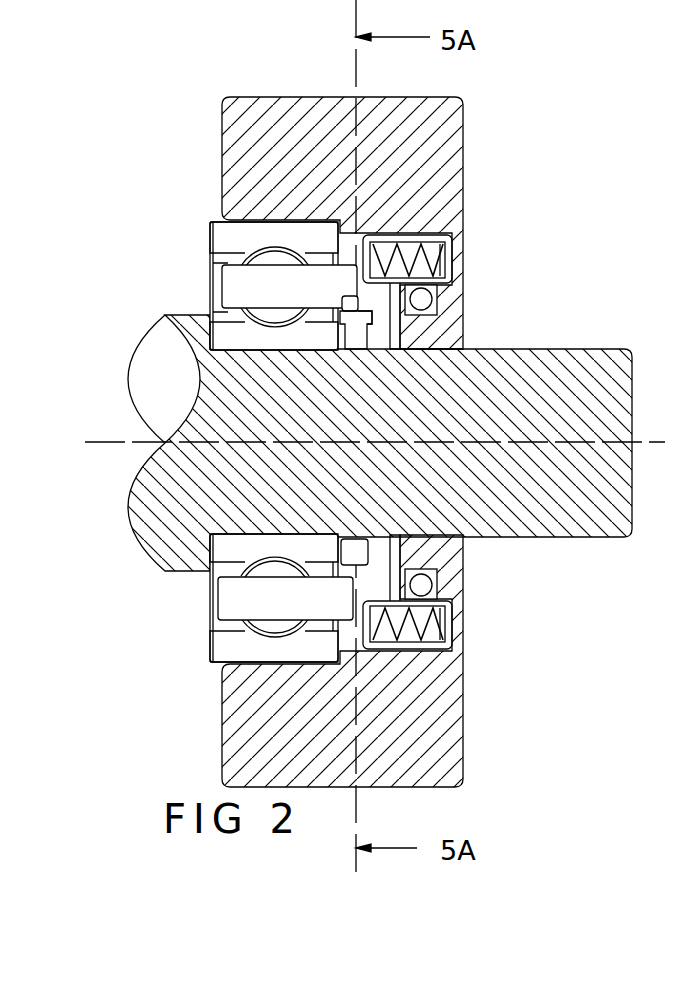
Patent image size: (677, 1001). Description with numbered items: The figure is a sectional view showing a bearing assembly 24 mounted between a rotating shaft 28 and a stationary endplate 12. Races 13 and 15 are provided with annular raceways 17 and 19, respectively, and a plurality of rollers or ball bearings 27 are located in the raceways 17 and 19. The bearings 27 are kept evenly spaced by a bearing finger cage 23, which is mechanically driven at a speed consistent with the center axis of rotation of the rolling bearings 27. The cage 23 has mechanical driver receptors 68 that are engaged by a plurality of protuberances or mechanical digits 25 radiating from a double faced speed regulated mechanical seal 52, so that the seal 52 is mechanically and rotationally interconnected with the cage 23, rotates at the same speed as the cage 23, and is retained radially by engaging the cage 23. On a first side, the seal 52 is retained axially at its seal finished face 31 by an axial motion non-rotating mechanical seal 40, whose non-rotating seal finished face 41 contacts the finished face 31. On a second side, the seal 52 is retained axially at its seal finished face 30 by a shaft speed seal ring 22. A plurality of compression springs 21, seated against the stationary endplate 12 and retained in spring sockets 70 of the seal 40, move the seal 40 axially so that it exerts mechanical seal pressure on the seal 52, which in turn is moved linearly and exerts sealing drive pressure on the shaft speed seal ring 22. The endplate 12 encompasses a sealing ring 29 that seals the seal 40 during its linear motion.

The stationary endplate 12 is at (462, 682).
The race 13 is at (274, 582).
The race 15 is at (240, 240).
The annular raceway 17 is at (273, 562).
The annular raceway 19 is at (283, 254).
The compression springs 21 is at (446, 262).
The shaft speed seal ring 22 is at (292, 332).
The bearing finger cage 23 is at (285, 598).
The bearing assembly 24 is at (207, 245).
The mechanical digits 25 is at (358, 310).
The ball bearings 27 is at (262, 627).
The rotating shaft 28 is at (610, 512).
The sealing ring 29 is at (424, 298).
The seal finished face 30 is at (326, 338).
The seal finished face 31 is at (372, 325).
The non-rotating mechanical seal 40 is at (377, 652).
The non-rotating seal finished face 41 is at (372, 552).
The double faced speed regulated mechanical seal 52 is at (358, 330).
The mechanical driver receptors 68 is at (345, 300).
The spring sockets 70 is at (452, 647).